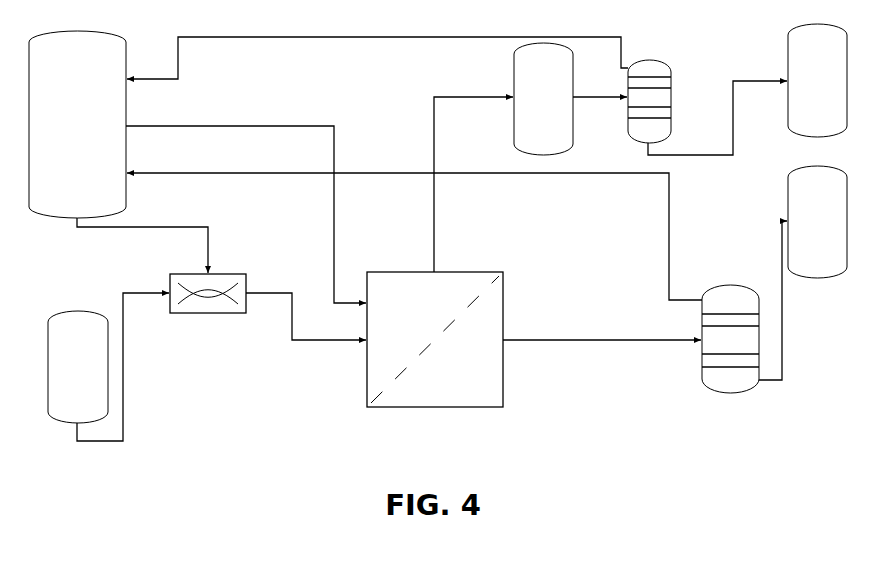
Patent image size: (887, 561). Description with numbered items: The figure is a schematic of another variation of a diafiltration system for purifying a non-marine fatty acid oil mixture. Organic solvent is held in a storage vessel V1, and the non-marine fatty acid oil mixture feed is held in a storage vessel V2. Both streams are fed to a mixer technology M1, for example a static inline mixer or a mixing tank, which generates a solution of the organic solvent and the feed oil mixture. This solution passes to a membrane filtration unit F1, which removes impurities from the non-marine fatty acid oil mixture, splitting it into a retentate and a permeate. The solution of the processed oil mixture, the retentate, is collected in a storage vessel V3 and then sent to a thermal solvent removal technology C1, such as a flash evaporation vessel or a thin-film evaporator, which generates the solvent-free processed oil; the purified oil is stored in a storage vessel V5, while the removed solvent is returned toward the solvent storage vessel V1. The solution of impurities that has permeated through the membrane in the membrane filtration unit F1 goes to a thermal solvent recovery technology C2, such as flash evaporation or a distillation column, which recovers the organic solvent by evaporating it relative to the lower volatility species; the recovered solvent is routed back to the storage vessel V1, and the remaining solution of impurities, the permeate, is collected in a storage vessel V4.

The storage vessel for the organic solvent V1 is at (77, 124).
The storage vessel for the non-marine fatty acid oil mixture feed V2 is at (78, 367).
The storage vessel for the retentate solution V3 is at (543, 99).
The storage vessel for the permeate solution V4 is at (817, 222).
The storage vessel for the purified oil V5 is at (817, 80).
The thermal solvent removal technology C1 is at (649, 101).
The thermal solvent recovery technology C2 is at (730, 339).
The membrane filtration unit F1 is at (435, 339).
The mixer technology M1 is at (208, 303).